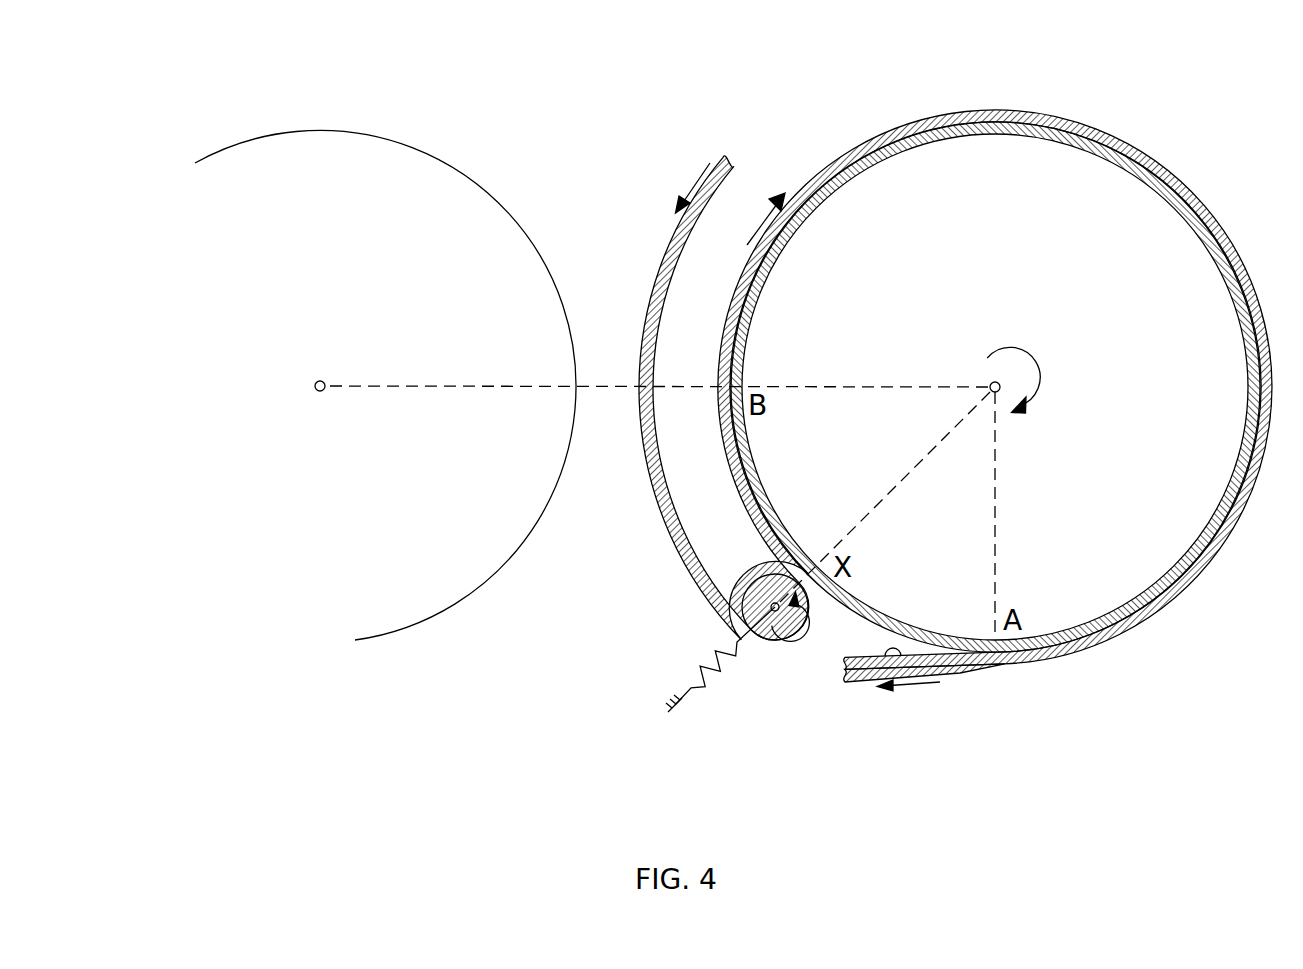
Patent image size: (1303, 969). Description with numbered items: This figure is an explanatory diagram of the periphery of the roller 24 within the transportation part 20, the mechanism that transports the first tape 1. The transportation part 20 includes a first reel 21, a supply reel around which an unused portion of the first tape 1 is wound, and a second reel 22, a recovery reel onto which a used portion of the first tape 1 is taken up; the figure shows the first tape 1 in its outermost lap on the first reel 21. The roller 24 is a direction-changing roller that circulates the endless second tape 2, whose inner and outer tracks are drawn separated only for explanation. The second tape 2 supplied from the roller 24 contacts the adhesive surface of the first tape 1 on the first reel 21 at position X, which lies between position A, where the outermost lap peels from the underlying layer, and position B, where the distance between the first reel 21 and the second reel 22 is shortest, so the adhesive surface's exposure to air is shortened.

The first tape 1 is at (910, 672).
The second tape 2 is at (723, 448).
The transportation part 20 is at (727, 385).
The first reel 21 is at (990, 163).
The second reel 22 is at (318, 162).
The roller 24 is at (775, 642).